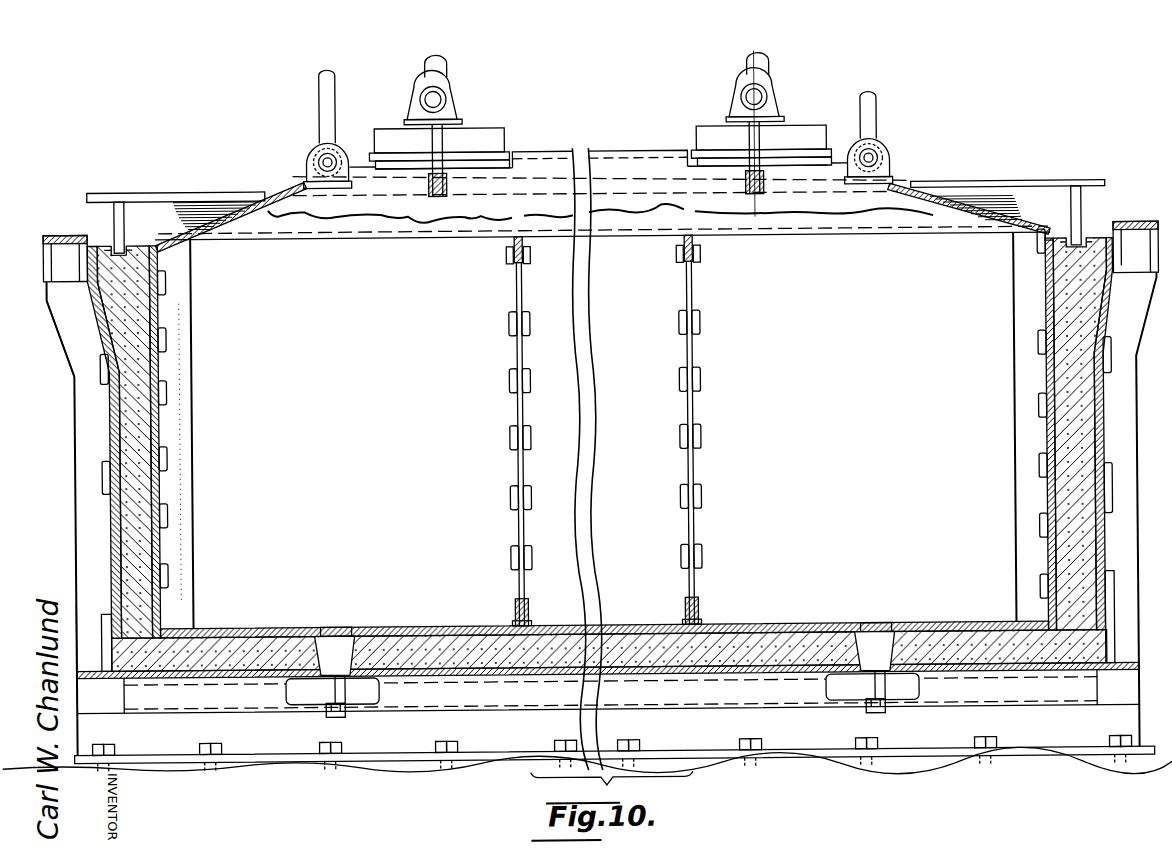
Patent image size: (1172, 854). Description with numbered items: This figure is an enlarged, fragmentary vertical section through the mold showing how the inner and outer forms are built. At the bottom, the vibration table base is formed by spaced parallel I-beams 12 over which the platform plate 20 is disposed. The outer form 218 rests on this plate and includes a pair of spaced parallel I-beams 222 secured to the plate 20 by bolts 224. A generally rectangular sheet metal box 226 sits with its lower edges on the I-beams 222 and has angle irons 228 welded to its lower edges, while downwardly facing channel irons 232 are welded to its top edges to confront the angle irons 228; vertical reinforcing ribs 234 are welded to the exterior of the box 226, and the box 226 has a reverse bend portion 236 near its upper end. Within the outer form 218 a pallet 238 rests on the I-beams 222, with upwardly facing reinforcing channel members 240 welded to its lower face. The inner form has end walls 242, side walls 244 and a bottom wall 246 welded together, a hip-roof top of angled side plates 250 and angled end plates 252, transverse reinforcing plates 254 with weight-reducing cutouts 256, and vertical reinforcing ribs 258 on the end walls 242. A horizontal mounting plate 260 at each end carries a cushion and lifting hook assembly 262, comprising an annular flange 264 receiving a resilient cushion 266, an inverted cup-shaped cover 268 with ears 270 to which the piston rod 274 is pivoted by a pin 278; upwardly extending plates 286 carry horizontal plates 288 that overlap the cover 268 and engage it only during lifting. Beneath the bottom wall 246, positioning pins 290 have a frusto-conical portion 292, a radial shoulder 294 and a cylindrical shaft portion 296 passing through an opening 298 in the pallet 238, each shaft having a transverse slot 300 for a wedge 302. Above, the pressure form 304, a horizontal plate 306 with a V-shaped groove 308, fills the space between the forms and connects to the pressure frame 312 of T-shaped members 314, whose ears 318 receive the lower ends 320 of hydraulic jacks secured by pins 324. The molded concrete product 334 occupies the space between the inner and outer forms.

The I-beams 12 is at (752, 52).
The platform plate 20 is at (927, 766).
The outer form 218 is at (70, 428).
The I-beams 222 is at (158, 762).
The bolts 224 is at (215, 740).
The sheet metal box 226 is at (118, 505).
The angle irons 228 is at (104, 612).
The channel irons 232 is at (48, 240).
The reinforcing ribs 234 is at (68, 385).
The reverse bend portion 236 is at (90, 332).
The pallet 238 is at (1027, 674).
The reinforcing channel members 240 is at (684, 709).
The end walls 242 is at (167, 372).
The side walls 244 is at (735, 306).
The bottom wall 246 is at (748, 625).
The angled side plates 250 is at (628, 150).
The angled end plates 252 is at (240, 208).
The reinforcing plates 254 is at (508, 248).
The rectangular cutouts 256 is at (525, 312).
The vertical reinforcing ribs 258 is at (194, 395).
The mounting plate 260 is at (395, 194).
The cushion and lifting hook assembly 262 is at (606, 119).
The annular flange 264 is at (470, 170).
The resilient cushion 266 is at (516, 162).
The cup-shaped cover 268 is at (508, 151).
The ears 270 is at (451, 88).
The piston rod 274 is at (452, 63).
The pin 278 is at (417, 98).
The upwardly extending plates 286 is at (433, 141).
The horizontal plates 288 is at (456, 118).
The positioning pins 290 is at (338, 625).
The frusto-conical portion 292 is at (316, 634).
The radial shoulder 294 is at (350, 665).
The cylindrical shaft portion 296 is at (343, 714).
The opening 298 is at (285, 688).
The transverse slot 300 is at (334, 707).
The wedge 302 is at (378, 692).
The pressure form 304 is at (108, 240).
The horizontal plate 306 is at (1048, 242).
The V-shaped groove 308 is at (122, 246).
The pressure frame 312 is at (173, 187).
The T-shaped members 314 is at (995, 184).
The ears 318 is at (310, 168).
The lower ends of hydraulic jacks 320 is at (323, 88).
The pins 324 is at (323, 151).
The molded concrete product 334 is at (155, 478).